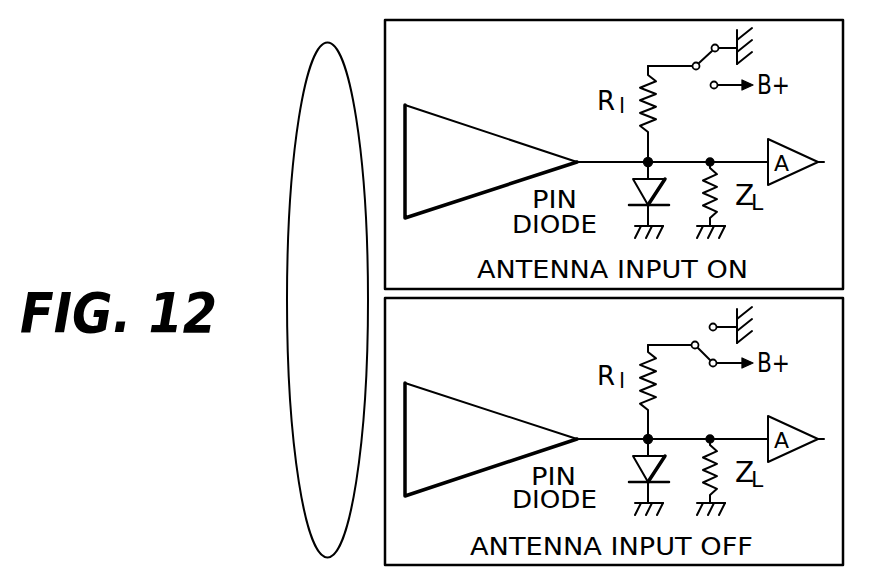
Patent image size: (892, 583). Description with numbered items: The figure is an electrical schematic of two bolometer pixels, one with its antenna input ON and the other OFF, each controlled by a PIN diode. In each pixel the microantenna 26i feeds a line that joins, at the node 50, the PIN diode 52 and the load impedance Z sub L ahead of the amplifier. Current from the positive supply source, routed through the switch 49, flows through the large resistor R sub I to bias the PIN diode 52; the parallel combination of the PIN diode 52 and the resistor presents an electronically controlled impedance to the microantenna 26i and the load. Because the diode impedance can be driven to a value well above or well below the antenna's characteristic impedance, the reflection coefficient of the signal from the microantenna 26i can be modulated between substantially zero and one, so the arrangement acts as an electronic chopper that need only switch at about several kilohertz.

The microantenna 26i is at (463, 123).
The switch 49 is at (705, 56).
The antenna input node 50 is at (647, 160).
The PIN diode 52 is at (633, 467).